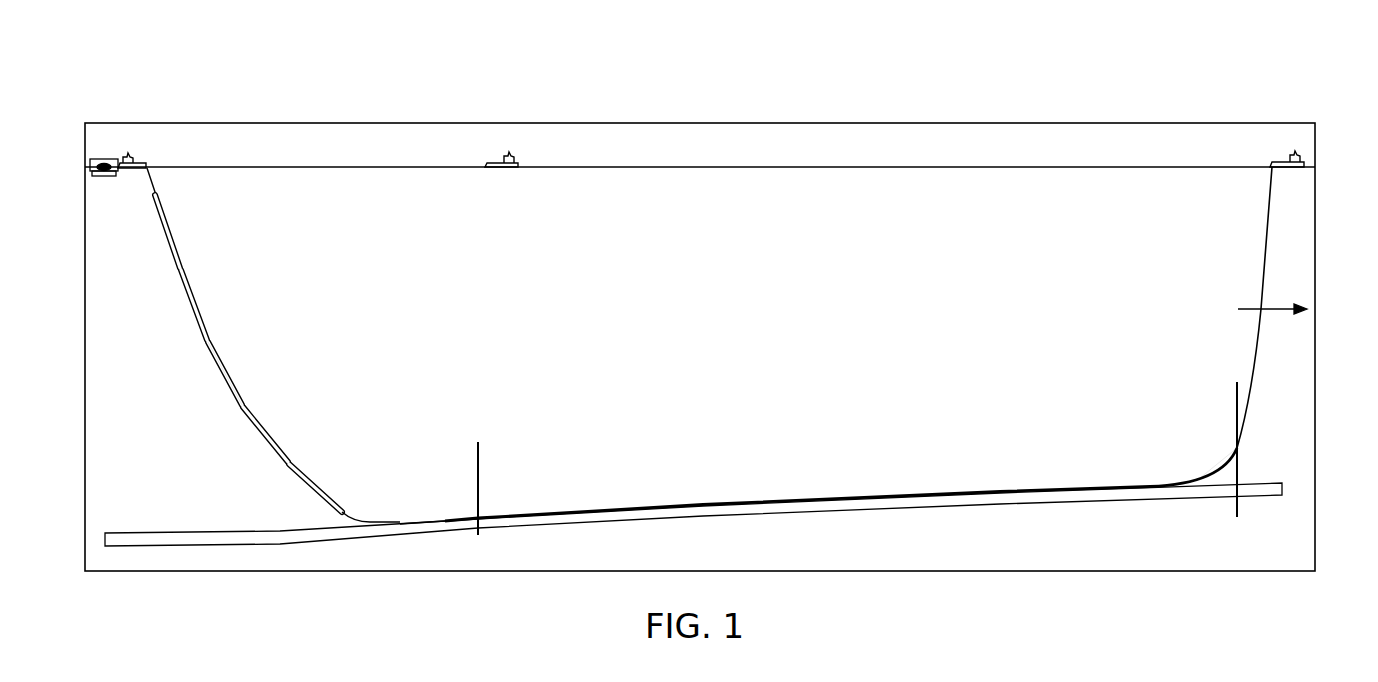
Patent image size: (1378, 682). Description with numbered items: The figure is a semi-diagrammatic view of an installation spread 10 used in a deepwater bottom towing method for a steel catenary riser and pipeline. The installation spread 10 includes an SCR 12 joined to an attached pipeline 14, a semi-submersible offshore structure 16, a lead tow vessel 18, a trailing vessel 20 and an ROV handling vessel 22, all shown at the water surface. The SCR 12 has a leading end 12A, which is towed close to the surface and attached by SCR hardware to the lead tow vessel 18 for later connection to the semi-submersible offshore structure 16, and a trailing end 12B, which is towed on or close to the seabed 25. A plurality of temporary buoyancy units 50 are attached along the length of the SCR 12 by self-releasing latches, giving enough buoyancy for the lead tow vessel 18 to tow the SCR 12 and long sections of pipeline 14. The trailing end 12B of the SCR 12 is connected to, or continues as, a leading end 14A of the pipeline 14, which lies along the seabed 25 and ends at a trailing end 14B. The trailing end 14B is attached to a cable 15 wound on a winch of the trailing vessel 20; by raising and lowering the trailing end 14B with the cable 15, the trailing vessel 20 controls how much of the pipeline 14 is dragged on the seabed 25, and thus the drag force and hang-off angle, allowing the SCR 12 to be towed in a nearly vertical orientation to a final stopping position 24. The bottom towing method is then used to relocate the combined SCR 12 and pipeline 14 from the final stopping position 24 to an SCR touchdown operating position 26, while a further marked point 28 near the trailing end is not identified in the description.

The installation spread 10 is at (1042, 70).
The SCR 12 is at (263, 345).
The leading end of the SCR 12A is at (150, 172).
The trailing end of the SCR 12B is at (382, 520).
The pipeline 14 is at (837, 455).
The leading end of the pipeline 14A is at (443, 515).
The trailing end of the pipeline 14B is at (1210, 473).
The cable 15 is at (1265, 263).
The semi-submersible offshore structure 16 is at (103, 159).
The lead tow vessel 18 is at (138, 157).
The trailing vessel 20 is at (1295, 152).
The ROV handling vessel 22 is at (510, 153).
The final stopping position 24 is at (483, 513).
The seabed 25 is at (752, 557).
The SCR touchdown operating position 26 is at (422, 530).
The second connection point 28 is at (1237, 483).
The temporary buoyancy units 50 is at (218, 357).